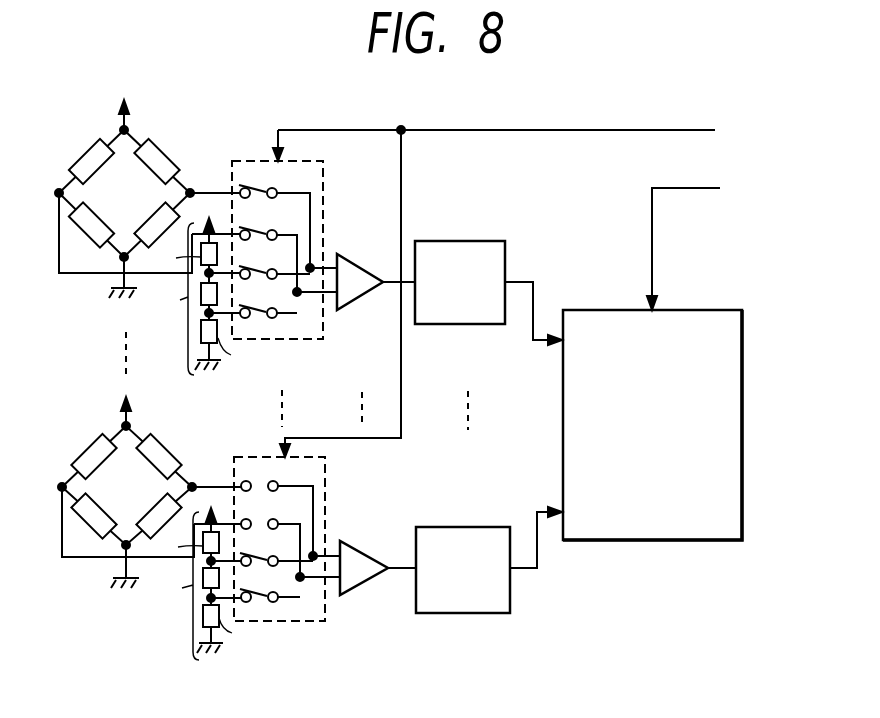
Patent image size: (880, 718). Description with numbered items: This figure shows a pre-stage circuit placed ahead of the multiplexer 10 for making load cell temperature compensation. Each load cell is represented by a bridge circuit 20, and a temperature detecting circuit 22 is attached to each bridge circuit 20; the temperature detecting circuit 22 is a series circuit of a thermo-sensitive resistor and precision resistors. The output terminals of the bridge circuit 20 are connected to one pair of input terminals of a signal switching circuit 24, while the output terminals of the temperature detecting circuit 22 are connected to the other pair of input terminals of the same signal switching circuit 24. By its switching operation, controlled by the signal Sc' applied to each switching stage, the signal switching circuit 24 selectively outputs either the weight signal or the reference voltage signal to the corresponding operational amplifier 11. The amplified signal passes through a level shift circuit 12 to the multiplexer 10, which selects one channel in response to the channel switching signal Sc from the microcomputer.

The multiplexer 10 is at (718, 541).
The operational amplifier 11 is at (362, 268).
The level shift circuit 12 is at (485, 241).
The bridge circuit 20 is at (143, 200).
The temperature detecting circuit 22 is at (203, 439).
The signal switching circuit 24 is at (311, 341).
The channel switching signal Sc is at (685, 228).
The control signal Sc' is at (494, 265).